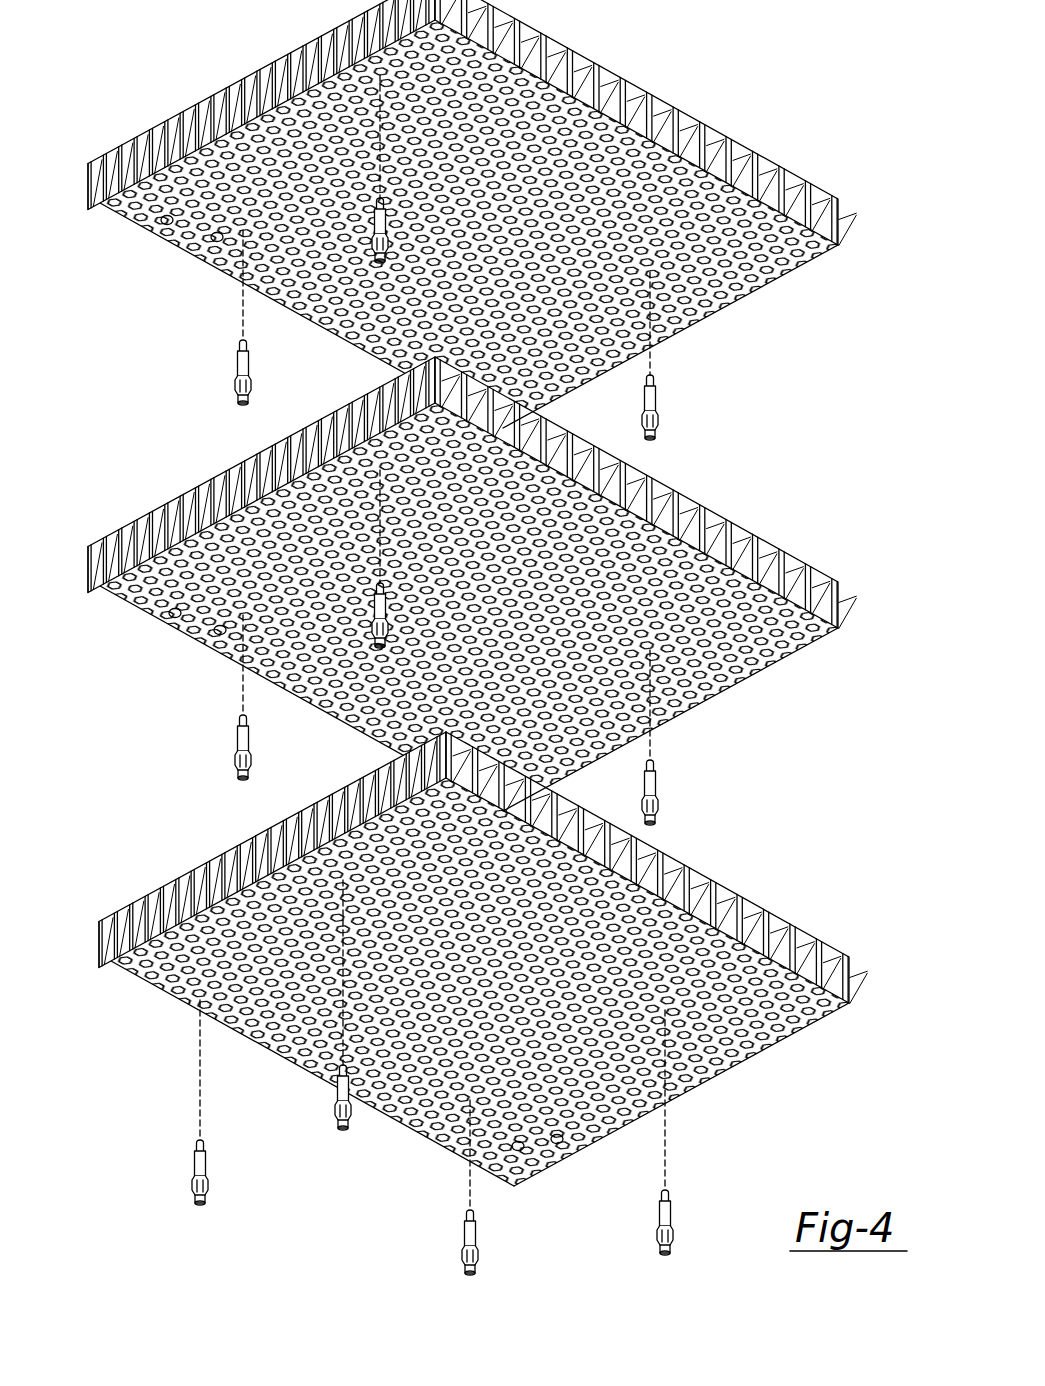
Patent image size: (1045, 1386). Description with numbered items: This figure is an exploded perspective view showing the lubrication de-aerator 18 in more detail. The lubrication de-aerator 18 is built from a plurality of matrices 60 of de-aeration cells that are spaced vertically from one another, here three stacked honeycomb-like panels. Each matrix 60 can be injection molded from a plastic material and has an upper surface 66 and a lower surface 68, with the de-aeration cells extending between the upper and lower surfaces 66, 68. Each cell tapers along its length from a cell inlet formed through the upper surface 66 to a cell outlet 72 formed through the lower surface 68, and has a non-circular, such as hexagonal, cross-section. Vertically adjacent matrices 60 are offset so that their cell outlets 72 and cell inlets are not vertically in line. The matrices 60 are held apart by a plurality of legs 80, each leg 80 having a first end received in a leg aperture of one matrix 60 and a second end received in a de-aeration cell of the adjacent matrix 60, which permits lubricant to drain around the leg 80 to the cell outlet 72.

The lubrication de-aerator 18 is at (488, 637).
The matrix 60 is at (125, 972).
The upper surface 66 is at (760, 922).
The lower surface 68 is at (805, 1035).
The cell outlet 72 is at (557, 1141).
The leg 80 is at (192, 1160).